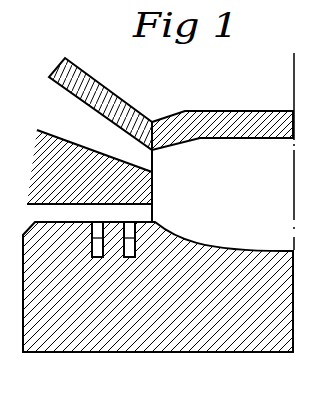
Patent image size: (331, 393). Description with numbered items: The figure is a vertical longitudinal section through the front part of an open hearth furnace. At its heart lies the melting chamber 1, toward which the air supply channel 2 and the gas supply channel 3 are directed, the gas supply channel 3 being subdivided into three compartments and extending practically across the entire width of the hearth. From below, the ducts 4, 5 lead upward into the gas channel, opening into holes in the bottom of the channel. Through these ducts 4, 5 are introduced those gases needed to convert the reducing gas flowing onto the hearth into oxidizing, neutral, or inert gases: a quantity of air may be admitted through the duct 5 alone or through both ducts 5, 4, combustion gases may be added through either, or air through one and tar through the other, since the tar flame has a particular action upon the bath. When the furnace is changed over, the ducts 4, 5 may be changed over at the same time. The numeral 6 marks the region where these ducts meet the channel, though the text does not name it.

The melting chamber 1 is at (223, 151).
The air supply channel 2 is at (89, 163).
The gas supply channel 3 is at (89, 214).
The duct 4 is at (98, 258).
The duct 5 is at (133, 258).
The joint 6 is at (136, 222).